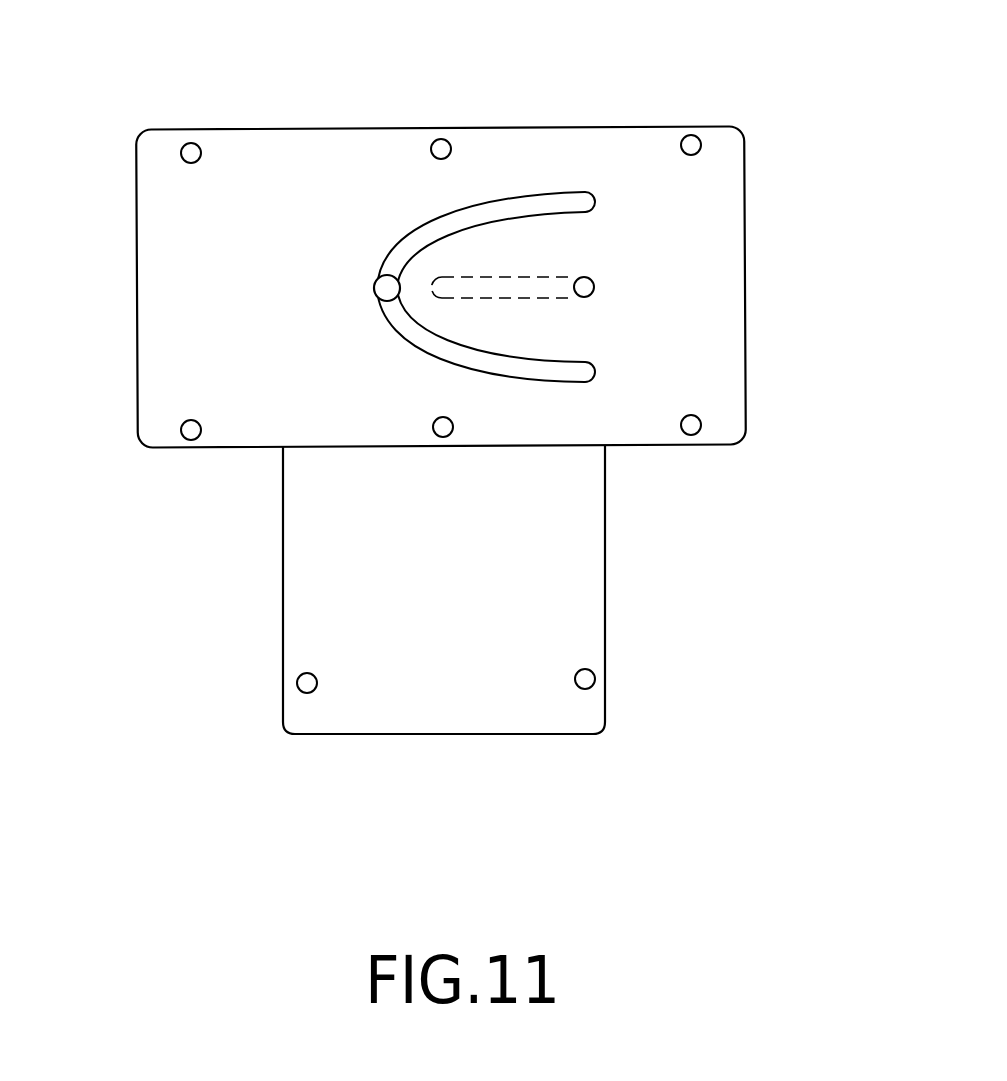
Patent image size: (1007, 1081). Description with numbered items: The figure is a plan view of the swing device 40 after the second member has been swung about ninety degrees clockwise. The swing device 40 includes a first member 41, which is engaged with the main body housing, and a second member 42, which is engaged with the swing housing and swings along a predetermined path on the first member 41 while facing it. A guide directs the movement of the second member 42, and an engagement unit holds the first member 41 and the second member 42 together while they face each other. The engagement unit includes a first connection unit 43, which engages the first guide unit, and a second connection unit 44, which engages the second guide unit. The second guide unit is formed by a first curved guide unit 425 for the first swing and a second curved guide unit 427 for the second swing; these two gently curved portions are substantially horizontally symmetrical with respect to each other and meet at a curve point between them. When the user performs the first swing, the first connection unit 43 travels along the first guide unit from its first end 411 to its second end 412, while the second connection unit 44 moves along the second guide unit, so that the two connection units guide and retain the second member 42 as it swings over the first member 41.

The swing device 40 is at (77, 57).
The first member 41 is at (605, 563).
The second member 42 is at (745, 357).
The first connection unit 43 is at (579, 158).
The second connection unit 44 is at (383, 290).
The first end 411 is at (432, 279).
The second end 412 is at (594, 287).
The first curved guide unit 425 is at (517, 209).
The second curved guide unit 427 is at (440, 347).